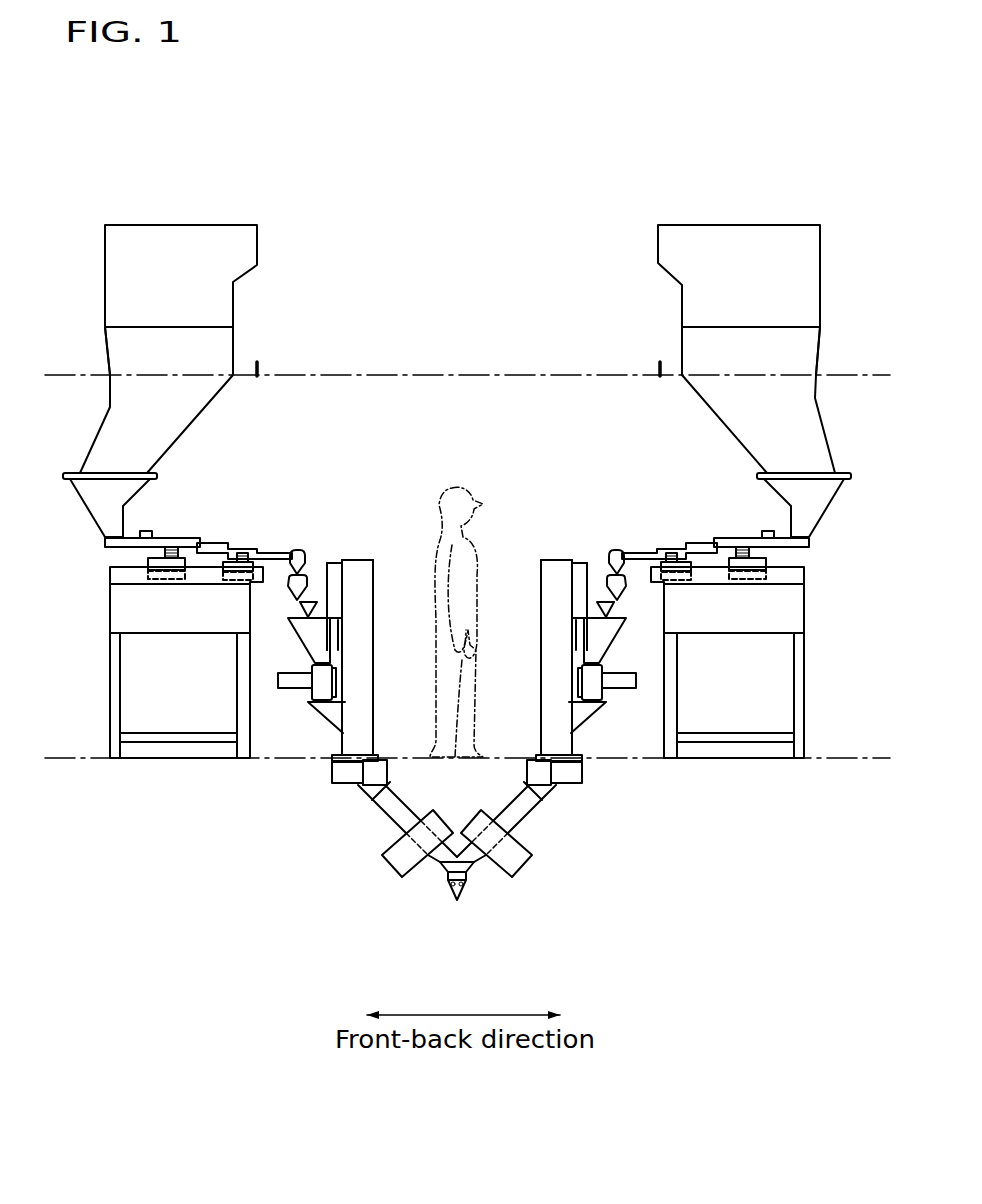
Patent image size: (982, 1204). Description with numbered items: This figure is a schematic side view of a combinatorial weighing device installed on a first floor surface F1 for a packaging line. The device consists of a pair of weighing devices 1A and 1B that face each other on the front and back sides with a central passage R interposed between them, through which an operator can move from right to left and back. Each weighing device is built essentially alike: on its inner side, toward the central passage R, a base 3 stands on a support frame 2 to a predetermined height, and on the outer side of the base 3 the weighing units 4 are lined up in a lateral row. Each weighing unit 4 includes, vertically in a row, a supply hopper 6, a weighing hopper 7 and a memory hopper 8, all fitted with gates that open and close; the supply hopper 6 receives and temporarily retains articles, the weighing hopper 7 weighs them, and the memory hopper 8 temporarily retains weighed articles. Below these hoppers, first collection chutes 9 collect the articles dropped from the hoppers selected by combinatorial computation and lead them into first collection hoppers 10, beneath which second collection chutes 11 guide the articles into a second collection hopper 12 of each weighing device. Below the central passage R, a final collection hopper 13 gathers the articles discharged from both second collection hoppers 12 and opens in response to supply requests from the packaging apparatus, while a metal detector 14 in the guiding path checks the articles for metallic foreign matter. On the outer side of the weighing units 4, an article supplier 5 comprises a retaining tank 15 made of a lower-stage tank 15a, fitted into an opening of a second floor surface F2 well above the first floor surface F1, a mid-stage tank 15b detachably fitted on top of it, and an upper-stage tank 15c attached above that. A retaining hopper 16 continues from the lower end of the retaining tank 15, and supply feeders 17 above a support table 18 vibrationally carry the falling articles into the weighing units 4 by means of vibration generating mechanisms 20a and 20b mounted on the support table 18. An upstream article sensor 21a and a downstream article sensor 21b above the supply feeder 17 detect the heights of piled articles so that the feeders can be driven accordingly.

The weighing device 1A is at (548, 521).
The weighing device 1B is at (325, 519).
The support frame 2 is at (374, 686).
The base 3 is at (374, 580).
The weighing unit 4 is at (476, 557).
The article supplier 5 is at (454, 423).
The supply hopper 6 is at (299, 549).
The weighing hopper 7 is at (288, 590).
The memory hopper 8 is at (300, 608).
The first collection chute 9 is at (303, 658).
The first collection hopper 10 is at (323, 680).
The second collection chute 11 is at (332, 717).
The second collection hopper 12 is at (380, 775).
The final collection hopper 13 is at (472, 875).
The metal detector 14 is at (393, 870).
The retaining tank 15 is at (454, 349).
The lower-stage tank 15a is at (102, 433).
The mid-stage tank 15b is at (238, 342).
The upper-stage tank 15c is at (238, 298).
The retaining hopper 16 is at (82, 505).
The supply feeder 17 is at (231, 536).
The support table 18 is at (110, 614).
The vibration generating mechanism 20a is at (150, 558).
The vibration generating mechanism 20b is at (227, 569).
The upstream article sensor 21a is at (213, 545).
The downstream article sensor 21b is at (285, 551).
The first floor surface F1 is at (840, 758).
The second floor surface F2 is at (870, 374).
The central passage R is at (466, 622).